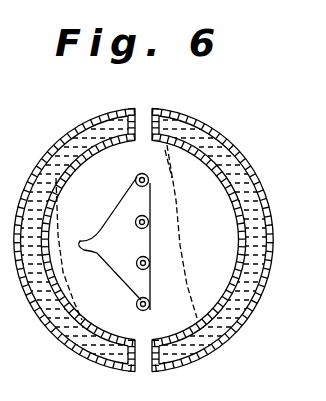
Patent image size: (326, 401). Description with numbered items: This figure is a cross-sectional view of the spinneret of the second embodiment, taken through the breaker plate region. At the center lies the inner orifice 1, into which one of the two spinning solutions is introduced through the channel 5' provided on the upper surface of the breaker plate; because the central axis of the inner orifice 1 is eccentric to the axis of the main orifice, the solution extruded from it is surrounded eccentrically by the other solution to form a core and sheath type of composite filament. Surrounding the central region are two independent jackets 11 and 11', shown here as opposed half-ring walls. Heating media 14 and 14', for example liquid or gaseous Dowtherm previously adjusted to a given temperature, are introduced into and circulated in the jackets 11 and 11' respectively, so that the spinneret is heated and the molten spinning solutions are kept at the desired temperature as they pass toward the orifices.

The inner orifice 1 is at (148, 223).
The channel 5' is at (78, 265).
The jacket 11 is at (222, 239).
The jacket 11' is at (74, 254).
The heating medium 14 is at (145, 227).
The heating medium 14' is at (145, 227).